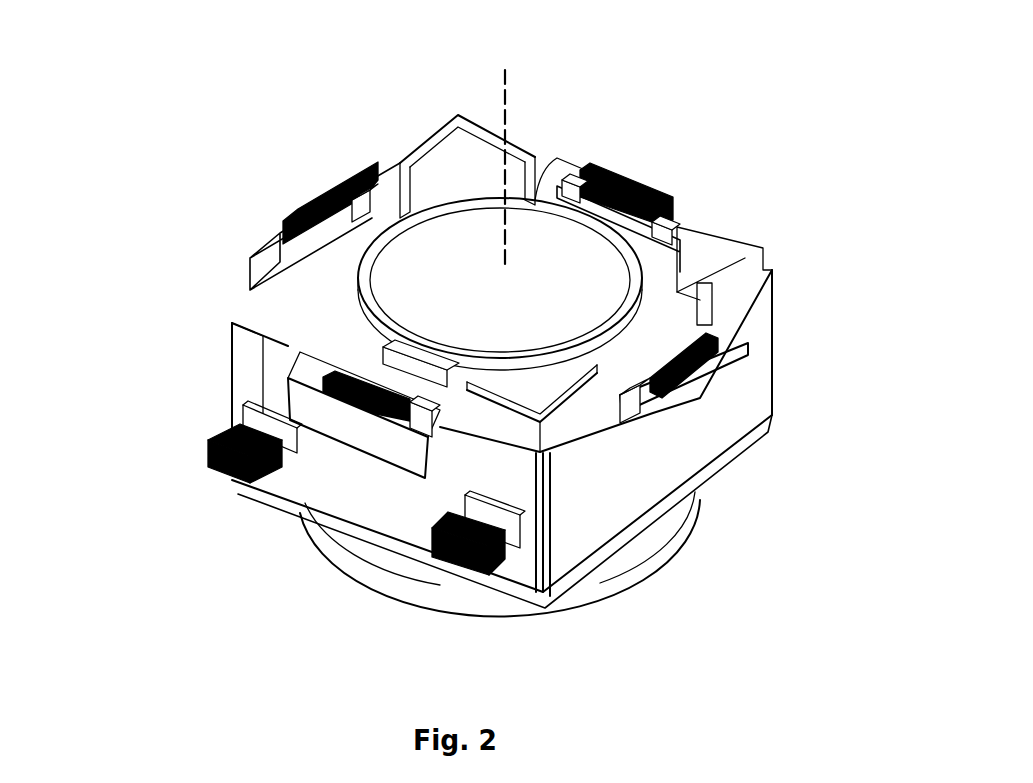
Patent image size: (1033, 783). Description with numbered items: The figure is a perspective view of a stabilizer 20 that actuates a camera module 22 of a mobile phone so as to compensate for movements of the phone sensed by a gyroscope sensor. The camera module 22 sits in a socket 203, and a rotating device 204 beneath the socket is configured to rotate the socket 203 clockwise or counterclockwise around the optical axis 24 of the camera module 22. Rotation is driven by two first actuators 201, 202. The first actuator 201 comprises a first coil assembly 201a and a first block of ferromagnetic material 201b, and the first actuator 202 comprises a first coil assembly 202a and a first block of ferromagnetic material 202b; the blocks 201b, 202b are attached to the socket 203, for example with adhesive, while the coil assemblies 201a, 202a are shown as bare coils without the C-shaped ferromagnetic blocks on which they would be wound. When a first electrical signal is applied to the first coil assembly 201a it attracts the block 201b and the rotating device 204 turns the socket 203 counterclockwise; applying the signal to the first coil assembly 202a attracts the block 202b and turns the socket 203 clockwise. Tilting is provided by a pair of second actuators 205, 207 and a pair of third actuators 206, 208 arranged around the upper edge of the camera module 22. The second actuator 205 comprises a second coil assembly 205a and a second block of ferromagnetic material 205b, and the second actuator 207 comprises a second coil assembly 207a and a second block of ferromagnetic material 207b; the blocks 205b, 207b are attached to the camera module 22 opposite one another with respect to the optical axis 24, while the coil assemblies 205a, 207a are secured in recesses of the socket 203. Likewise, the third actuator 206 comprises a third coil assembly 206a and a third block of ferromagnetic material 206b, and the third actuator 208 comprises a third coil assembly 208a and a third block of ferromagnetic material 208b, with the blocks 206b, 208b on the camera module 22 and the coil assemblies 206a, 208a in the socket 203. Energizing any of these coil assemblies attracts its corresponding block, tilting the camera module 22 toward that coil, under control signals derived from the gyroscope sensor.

The stabilizer 20 is at (757, 45).
The camera module 22 is at (552, 248).
The optical axis 24 is at (505, 100).
The first actuator 201 is at (180, 431).
The first coil assembly 201a is at (225, 466).
The first block of ferromagnetic material 201b is at (263, 412).
The first actuator 202 is at (533, 600).
The first coil assembly 202a is at (457, 562).
The first block of ferromagnetic material 202b is at (525, 532).
The socket 203 is at (777, 382).
The rotating device 204 is at (667, 567).
The second actuator 205 is at (325, 159).
The second coil assembly 205a is at (306, 205).
The second block of ferromagnetic material 205b is at (362, 212).
The third actuator 206 is at (303, 428).
The third coil assembly 206a is at (360, 410).
The third block of ferromagnetic material 206b is at (418, 373).
The second actuator 207 is at (727, 344).
The second coil assembly 207a is at (697, 377).
The second block of ferromagnetic material 207b is at (633, 340).
The third actuator 208 is at (688, 190).
The third coil assembly 208a is at (637, 222).
The third block of ferromagnetic material 208b is at (617, 200).